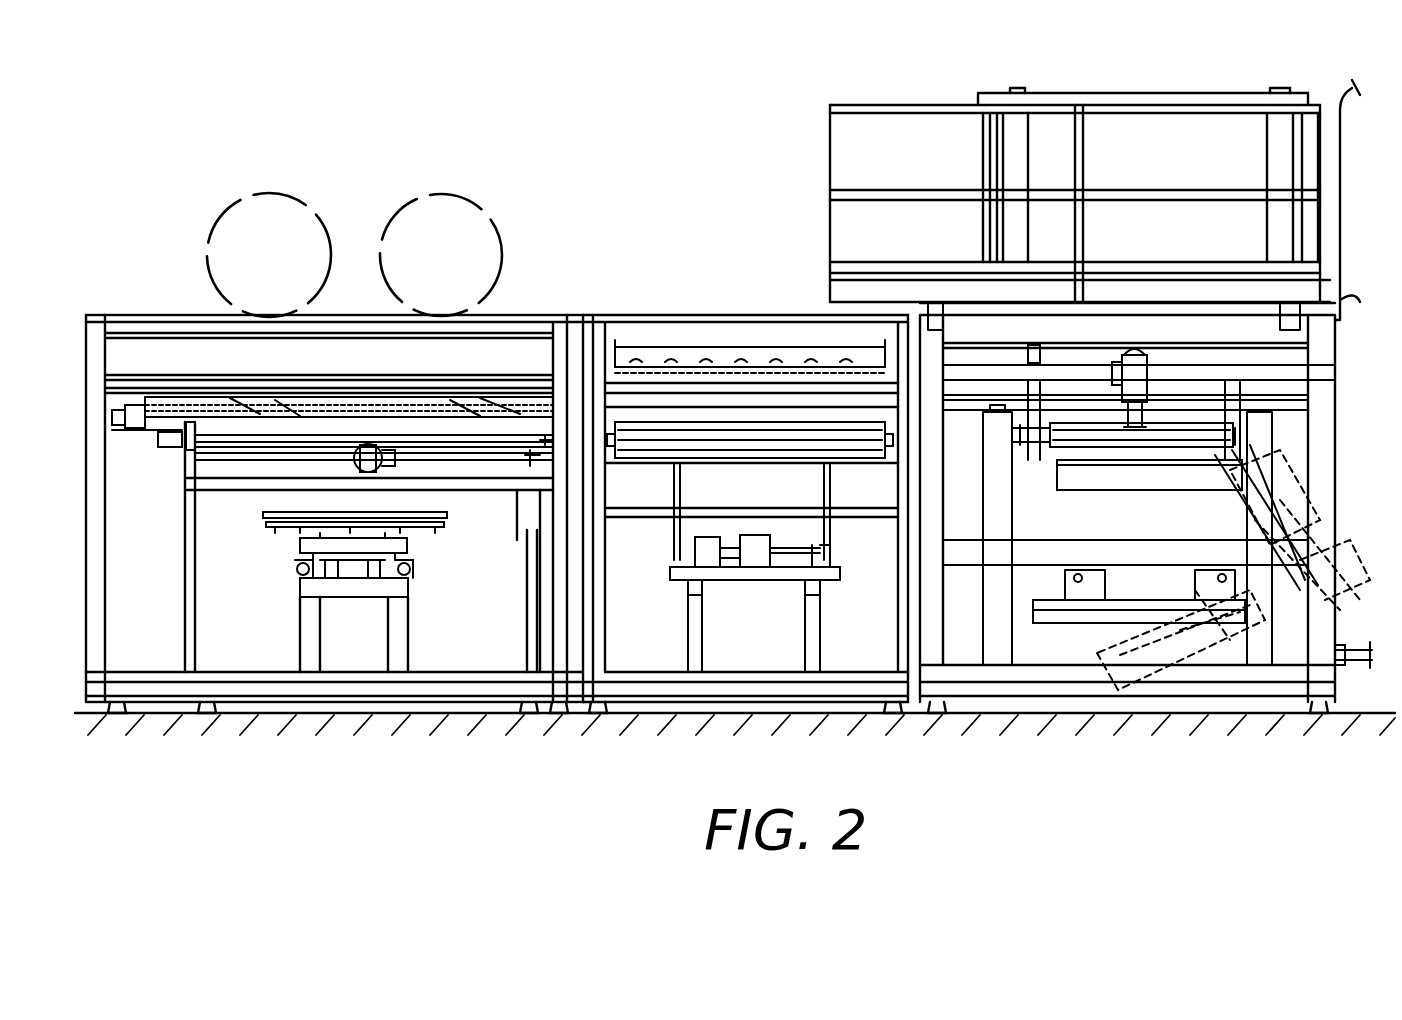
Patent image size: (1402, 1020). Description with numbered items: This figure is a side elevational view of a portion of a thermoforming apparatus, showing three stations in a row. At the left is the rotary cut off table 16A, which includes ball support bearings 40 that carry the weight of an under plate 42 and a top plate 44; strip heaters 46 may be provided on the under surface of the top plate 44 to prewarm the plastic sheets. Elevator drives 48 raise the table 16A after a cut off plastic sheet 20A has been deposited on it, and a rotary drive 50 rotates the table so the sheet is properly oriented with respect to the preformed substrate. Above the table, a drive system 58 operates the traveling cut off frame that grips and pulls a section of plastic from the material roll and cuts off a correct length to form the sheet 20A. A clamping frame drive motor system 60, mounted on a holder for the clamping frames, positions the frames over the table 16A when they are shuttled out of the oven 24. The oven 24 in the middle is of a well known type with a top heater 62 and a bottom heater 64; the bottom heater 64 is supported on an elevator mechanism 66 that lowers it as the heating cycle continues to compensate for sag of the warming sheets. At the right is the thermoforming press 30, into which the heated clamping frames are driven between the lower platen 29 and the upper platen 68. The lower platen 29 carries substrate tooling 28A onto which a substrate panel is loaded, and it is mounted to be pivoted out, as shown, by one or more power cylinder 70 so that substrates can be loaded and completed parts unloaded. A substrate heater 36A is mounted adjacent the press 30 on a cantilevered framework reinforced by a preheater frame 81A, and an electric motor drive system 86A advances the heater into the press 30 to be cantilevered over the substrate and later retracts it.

The rotary cut off table 16A is at (258, 582).
The cut off piece of plastic sheet 20A is at (222, 388).
The oven 24 is at (790, 296).
The substrate tooling 28A is at (1300, 492).
The lower platen 29 is at (1048, 618).
The thermoforming press 30 is at (1360, 421).
The substrate heater 36A is at (1053, 482).
The ball support bearings 40 is at (407, 516).
The under plate 42 is at (300, 551).
The top plate 44 is at (263, 515).
The strip heaters 46 is at (300, 543).
The elevator drives 48 is at (413, 574).
The rotary drive 50 is at (352, 572).
The drive system 58 is at (335, 445).
The clamping frame drive motor system 60 is at (150, 384).
The top heater 62 is at (617, 350).
The bottom heater 64 is at (645, 452).
The elevator mechanism 66 is at (658, 568).
The upper platen 68 is at (1048, 350).
The power cylinder 70 is at (1165, 650).
The preheater frame 81A is at (978, 487).
The electric motor drive system 86A is at (1158, 360).